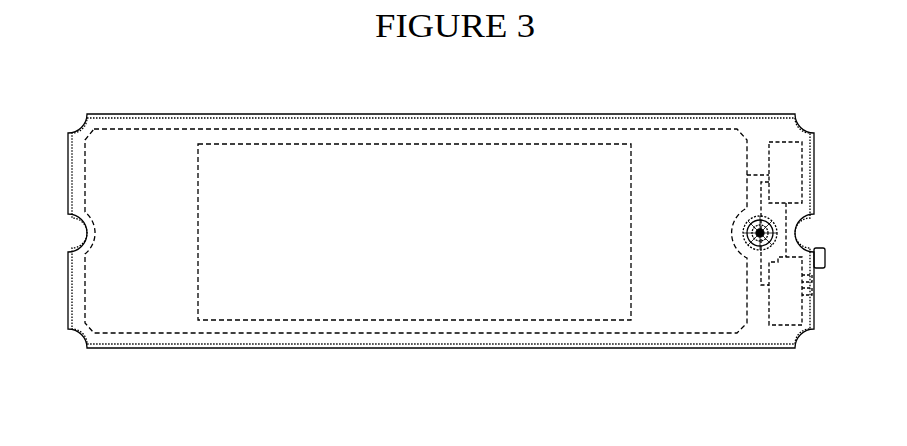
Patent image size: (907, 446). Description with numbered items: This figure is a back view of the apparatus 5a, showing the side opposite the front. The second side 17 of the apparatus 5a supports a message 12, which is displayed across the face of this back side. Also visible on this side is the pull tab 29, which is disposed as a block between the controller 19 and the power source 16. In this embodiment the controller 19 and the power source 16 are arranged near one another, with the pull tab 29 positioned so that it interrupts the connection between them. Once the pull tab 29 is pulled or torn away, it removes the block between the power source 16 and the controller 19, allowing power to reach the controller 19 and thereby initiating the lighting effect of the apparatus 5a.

The apparatus 5a is at (140, 95).
The message 12 is at (430, 322).
The second side 17 is at (160, 270).
The controller 19 is at (790, 165).
The pull tab 29 is at (815, 250).
The power source 16 is at (790, 311).